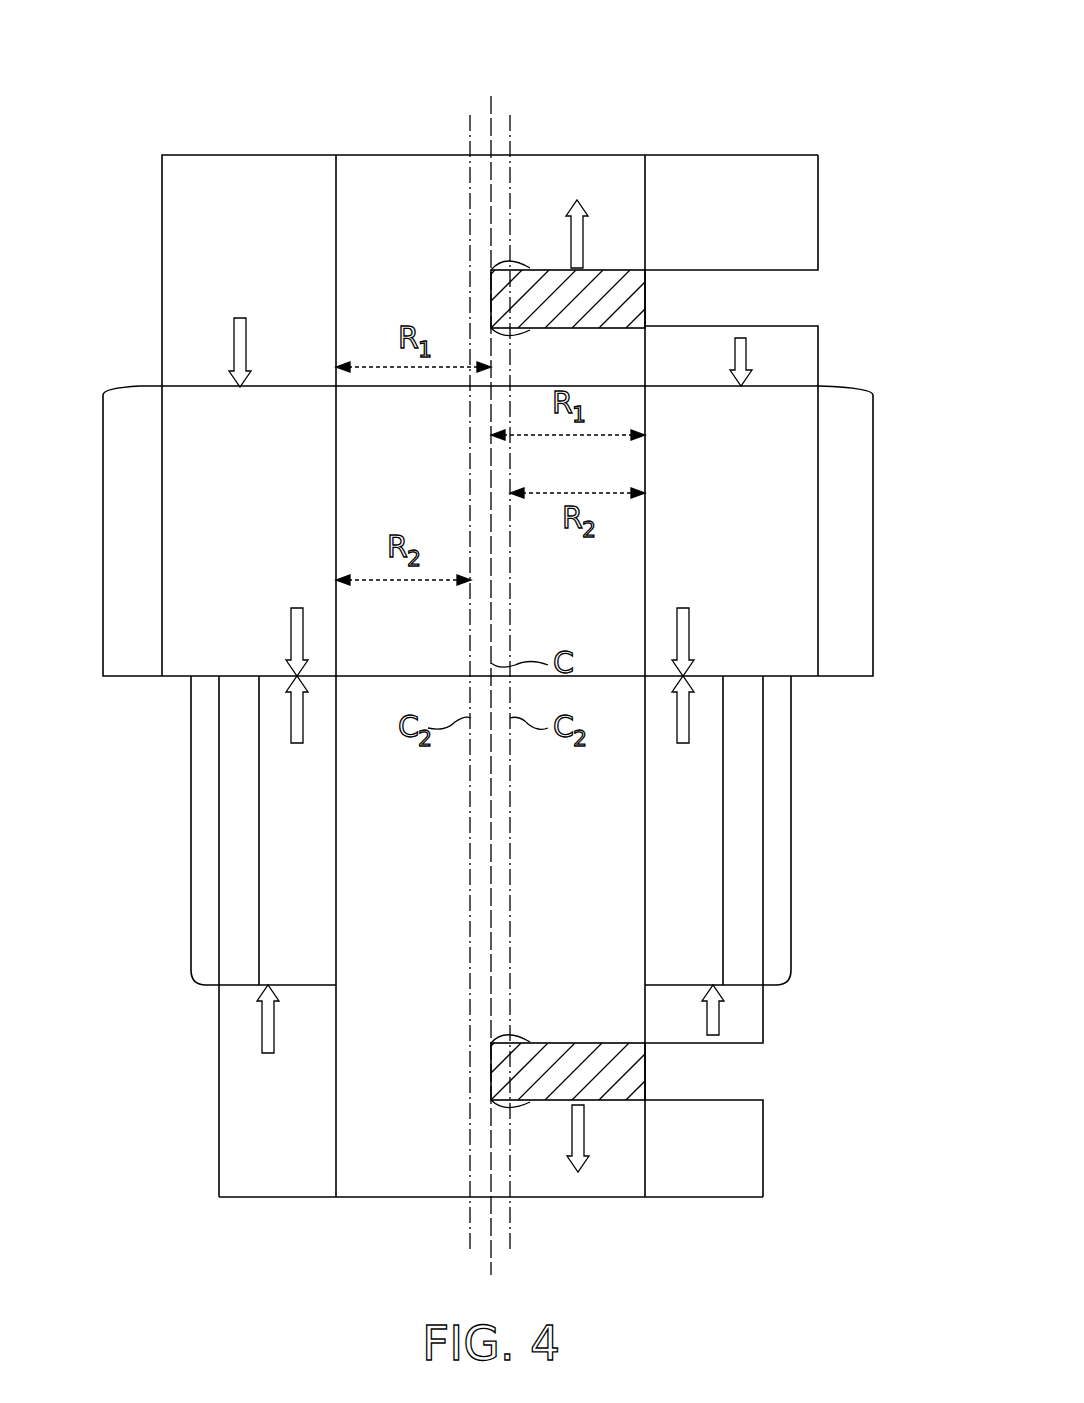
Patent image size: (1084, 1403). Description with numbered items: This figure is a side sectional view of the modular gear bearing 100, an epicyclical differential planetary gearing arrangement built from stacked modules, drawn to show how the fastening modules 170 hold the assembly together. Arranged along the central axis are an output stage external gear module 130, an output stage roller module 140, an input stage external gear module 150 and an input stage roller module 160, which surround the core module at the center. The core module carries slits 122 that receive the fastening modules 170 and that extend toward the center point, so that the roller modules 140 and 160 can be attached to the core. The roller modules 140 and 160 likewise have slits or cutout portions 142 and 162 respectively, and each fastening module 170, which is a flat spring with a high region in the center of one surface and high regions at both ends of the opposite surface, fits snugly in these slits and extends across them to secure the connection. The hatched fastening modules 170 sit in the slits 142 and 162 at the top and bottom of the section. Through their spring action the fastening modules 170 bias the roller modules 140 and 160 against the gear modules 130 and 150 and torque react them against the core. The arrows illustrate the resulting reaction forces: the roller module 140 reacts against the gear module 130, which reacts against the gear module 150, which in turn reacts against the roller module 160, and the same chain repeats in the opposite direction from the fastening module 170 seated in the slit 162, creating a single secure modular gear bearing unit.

The modular gear bearing 100 is at (385, 108).
The slits 122 is at (545, 270).
The output stage external gear module 130 is at (873, 518).
The output stage roller module 140 is at (162, 210).
The slits or cutout portions 142 is at (763, 298).
The input stage external gear module 150 is at (191, 810).
The input stage roller module 160 is at (763, 1013).
The slits or cutout portions 162 is at (712, 1072).
The fastening module 170 is at (640, 297).